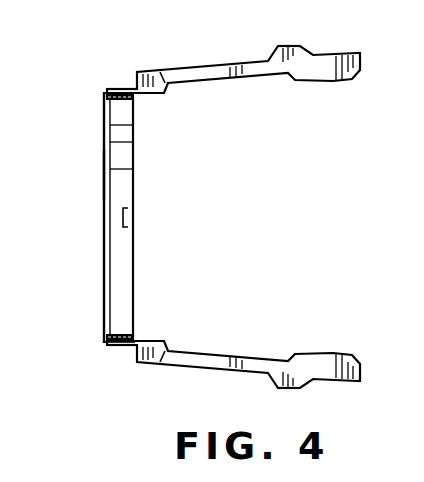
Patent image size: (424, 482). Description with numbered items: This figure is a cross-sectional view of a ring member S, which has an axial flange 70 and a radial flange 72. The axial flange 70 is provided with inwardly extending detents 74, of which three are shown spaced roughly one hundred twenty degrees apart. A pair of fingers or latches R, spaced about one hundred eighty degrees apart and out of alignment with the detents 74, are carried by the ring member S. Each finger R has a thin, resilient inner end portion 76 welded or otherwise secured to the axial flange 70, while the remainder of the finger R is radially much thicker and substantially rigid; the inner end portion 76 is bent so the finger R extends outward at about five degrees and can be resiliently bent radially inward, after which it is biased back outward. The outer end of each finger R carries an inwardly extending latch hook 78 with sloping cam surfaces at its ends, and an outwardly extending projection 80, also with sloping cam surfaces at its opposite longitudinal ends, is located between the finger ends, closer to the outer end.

The axial flange 70 is at (123, 180).
The radial flange 72 is at (107, 100).
The detent 74 is at (122, 215).
The inner end portion 76 is at (123, 86).
The latch hook 78 is at (342, 82).
The outwardly extending projection 80 is at (290, 46).
The finger R is at (215, 65).
The ring member S is at (104, 175).